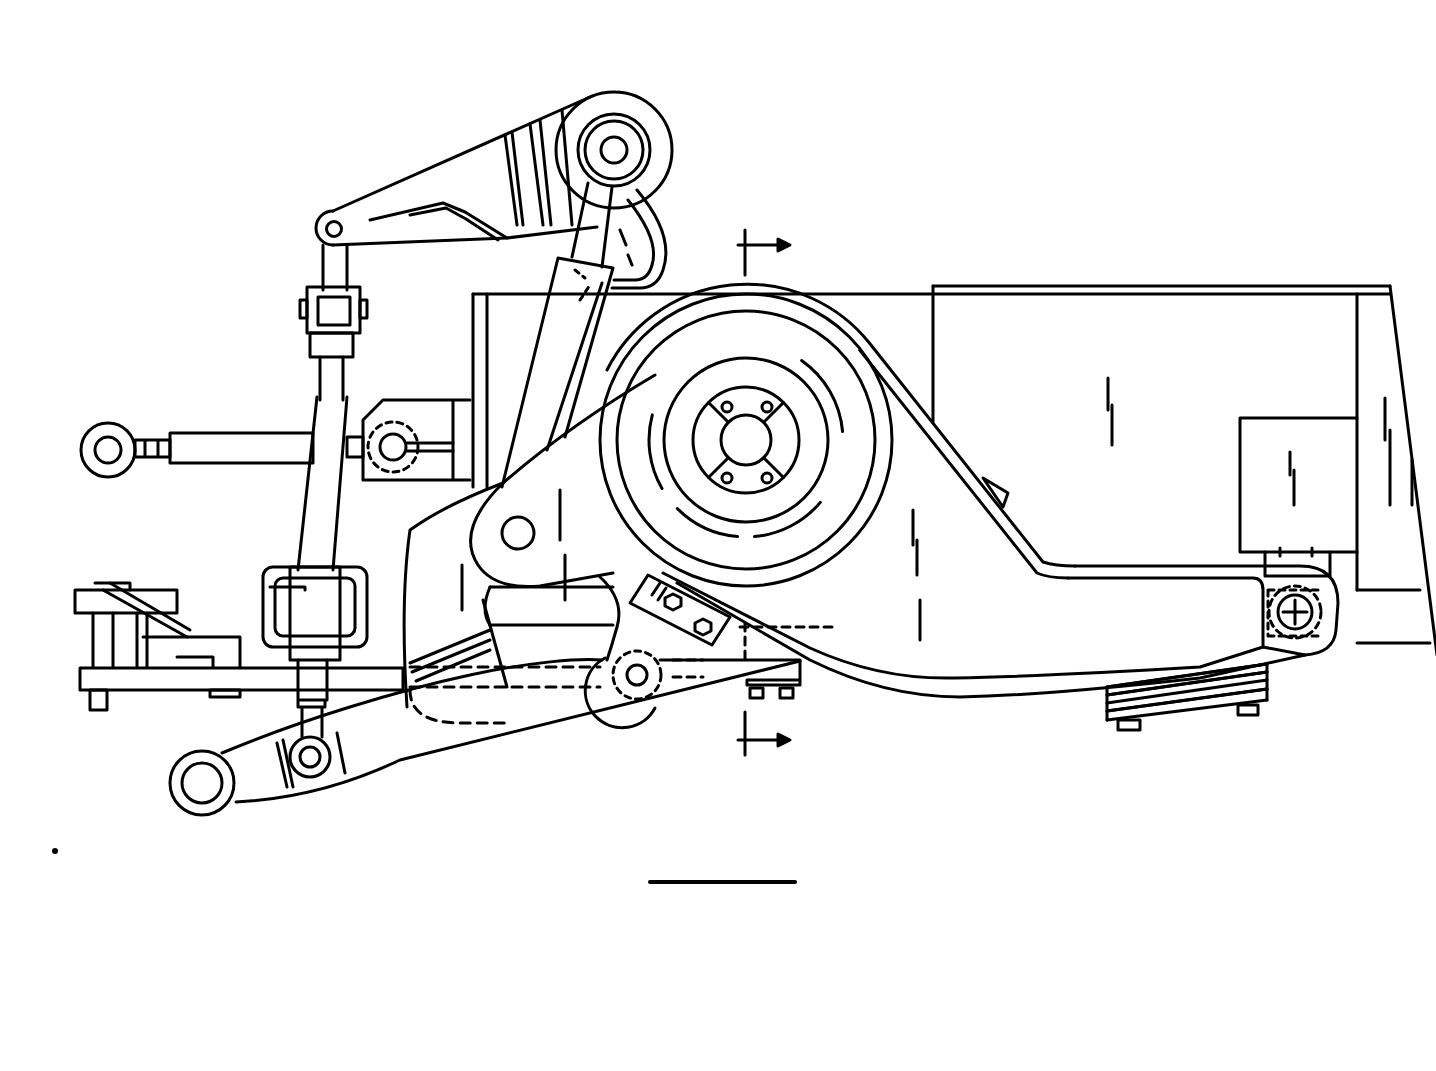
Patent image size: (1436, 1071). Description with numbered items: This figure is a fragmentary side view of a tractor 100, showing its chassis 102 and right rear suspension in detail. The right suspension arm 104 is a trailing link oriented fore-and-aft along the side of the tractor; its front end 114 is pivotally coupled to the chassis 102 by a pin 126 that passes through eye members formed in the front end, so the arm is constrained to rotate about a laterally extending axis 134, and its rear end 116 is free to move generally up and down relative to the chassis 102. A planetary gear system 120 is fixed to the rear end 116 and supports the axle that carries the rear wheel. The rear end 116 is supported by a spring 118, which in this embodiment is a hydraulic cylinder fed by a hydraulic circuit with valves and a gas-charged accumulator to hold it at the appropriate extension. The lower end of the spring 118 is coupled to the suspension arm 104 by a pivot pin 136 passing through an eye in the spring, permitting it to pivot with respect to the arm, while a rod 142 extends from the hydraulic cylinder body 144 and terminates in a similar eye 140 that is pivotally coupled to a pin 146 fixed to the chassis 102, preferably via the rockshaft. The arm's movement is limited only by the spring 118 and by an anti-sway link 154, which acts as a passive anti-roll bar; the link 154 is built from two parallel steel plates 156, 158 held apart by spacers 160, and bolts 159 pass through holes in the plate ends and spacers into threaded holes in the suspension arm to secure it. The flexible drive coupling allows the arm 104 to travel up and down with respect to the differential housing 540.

The tractor 100 is at (998, 186).
The chassis 102 is at (915, 293).
The right suspension arm 104 is at (1015, 485).
The front end 114 is at (1278, 650).
The rear end 116 is at (505, 549).
The spring 118 is at (550, 345).
The planetary gear system 120 is at (818, 557).
The pin 126 is at (1302, 628).
The laterally extending axis 134 is at (1273, 600).
The pivot pin 136 is at (520, 550).
The eye 140 is at (640, 130).
The rod 142 is at (660, 193).
The hydraulic cylinder body 144 is at (539, 185).
The pin 146 is at (606, 140).
The anti-sway link 154 is at (1191, 708).
The plate 156 is at (1163, 708).
The plate 158 is at (1123, 683).
The bolts 159 is at (1130, 728).
The spacers 160 is at (1140, 693).
The differential housing 540 is at (858, 300).